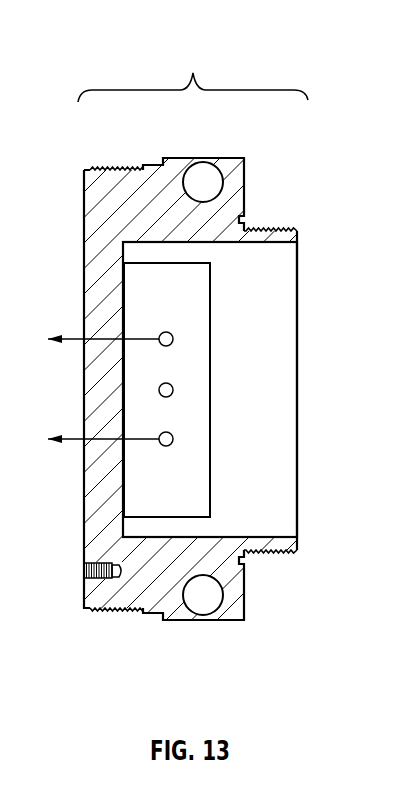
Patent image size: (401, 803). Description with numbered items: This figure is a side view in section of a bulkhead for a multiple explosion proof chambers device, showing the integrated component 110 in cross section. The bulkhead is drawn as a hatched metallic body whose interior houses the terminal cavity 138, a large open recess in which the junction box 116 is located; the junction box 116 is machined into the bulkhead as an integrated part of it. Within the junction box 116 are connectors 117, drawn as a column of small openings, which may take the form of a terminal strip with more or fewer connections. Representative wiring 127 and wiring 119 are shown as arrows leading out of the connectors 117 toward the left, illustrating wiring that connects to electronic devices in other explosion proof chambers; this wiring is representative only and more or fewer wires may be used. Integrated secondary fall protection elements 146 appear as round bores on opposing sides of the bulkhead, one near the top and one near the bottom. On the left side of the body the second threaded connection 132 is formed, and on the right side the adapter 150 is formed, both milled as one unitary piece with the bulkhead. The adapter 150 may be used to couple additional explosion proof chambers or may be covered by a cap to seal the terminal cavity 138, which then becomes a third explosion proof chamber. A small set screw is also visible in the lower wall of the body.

The integrated component 110 is at (193, 72).
The second threaded connection 132 is at (117, 178).
The integrated secondary fall protection elements 146 is at (207, 178).
The adapter 150 is at (295, 238).
The terminal cavity 138 is at (278, 343).
The junction box 116 is at (210, 453).
The connectors 117 is at (173, 340).
The wiring 127 is at (77, 337).
The wiring 119 is at (77, 437).